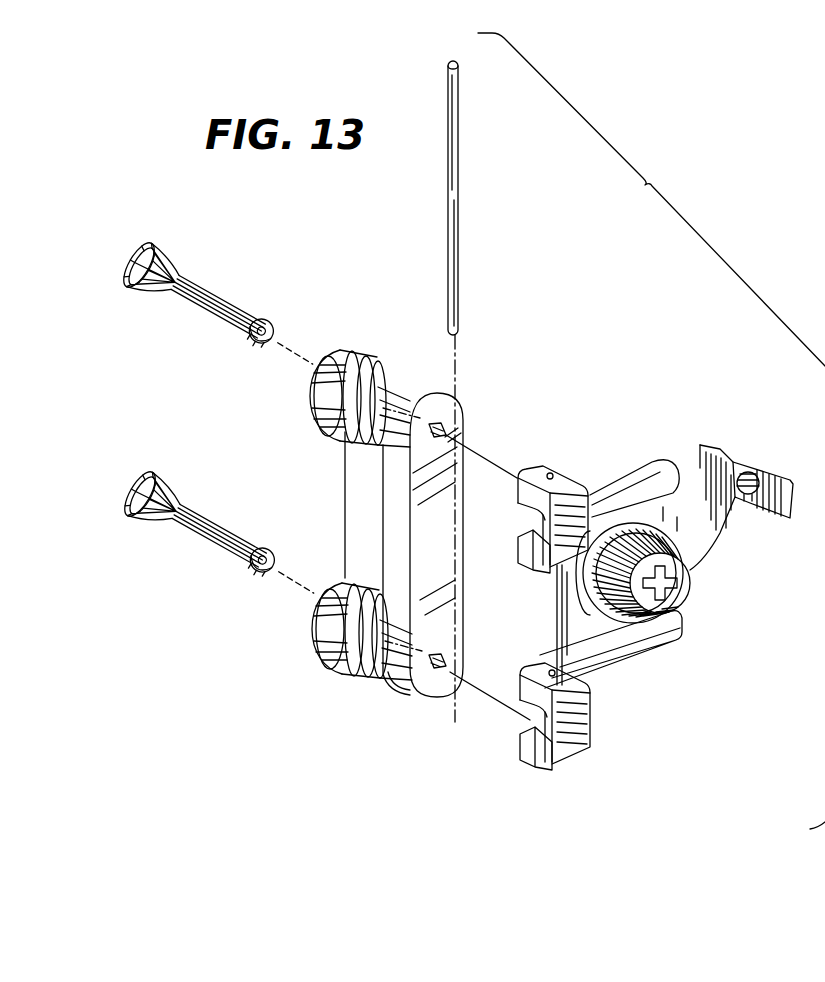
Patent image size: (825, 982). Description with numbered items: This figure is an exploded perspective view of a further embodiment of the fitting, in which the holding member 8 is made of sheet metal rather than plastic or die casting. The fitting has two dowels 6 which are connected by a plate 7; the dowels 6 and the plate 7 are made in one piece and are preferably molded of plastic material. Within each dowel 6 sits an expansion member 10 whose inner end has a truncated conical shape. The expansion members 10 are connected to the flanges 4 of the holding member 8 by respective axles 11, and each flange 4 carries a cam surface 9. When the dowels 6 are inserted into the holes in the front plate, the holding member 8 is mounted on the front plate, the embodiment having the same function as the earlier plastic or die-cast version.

The flange 4 is at (573, 742).
The dowel 6 is at (353, 358).
The plate 7 is at (403, 670).
The holding member 8 is at (700, 445).
The cam surface 9 is at (525, 752).
The expansion member 10 is at (216, 530).
The axle 11 is at (458, 210).